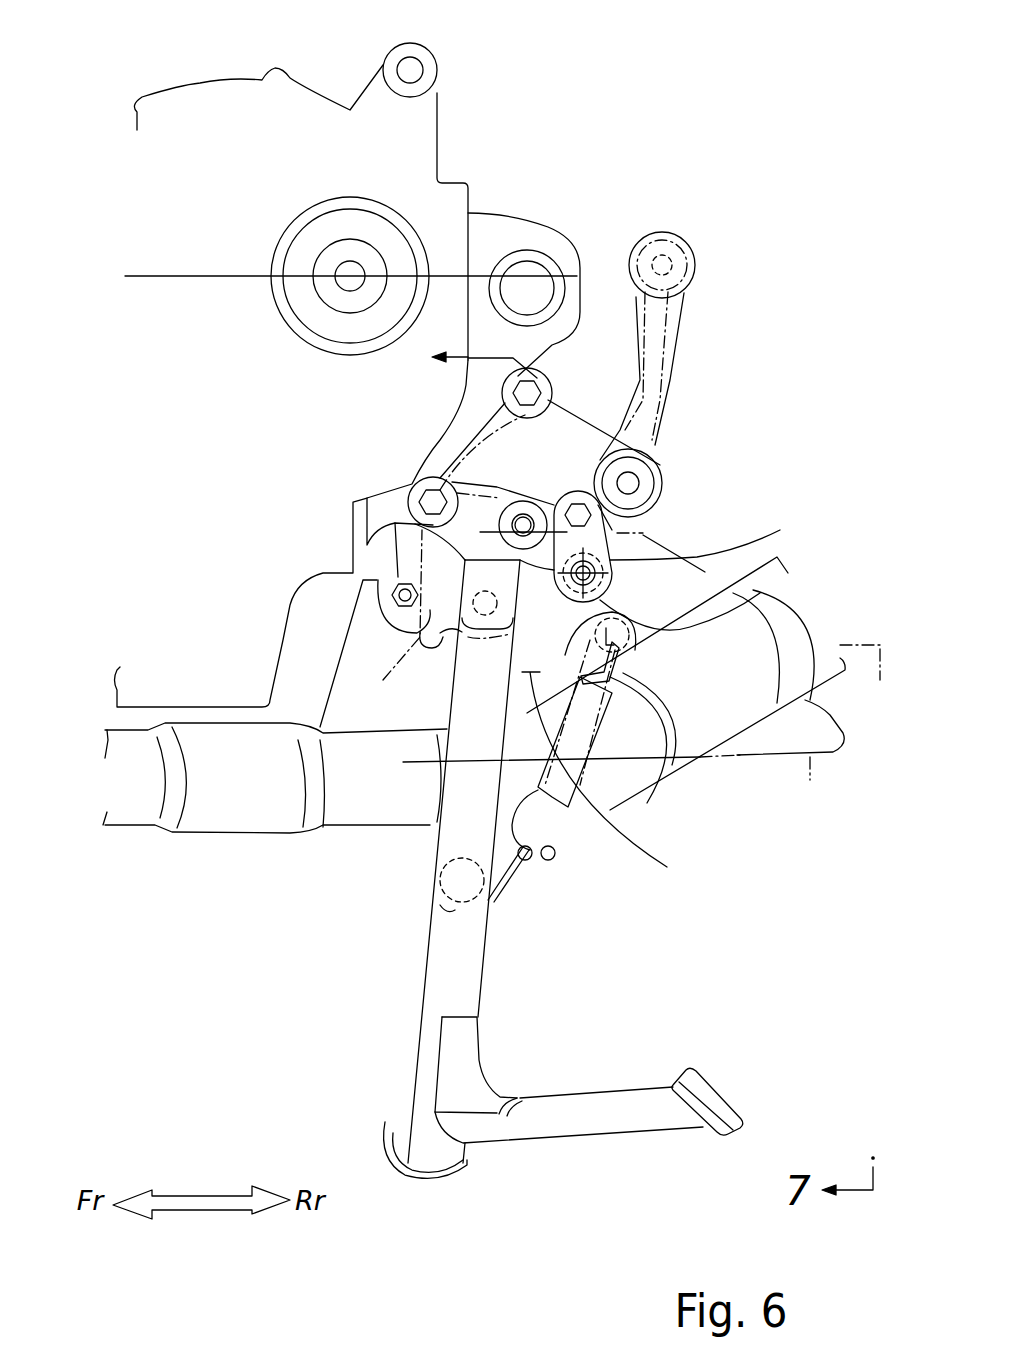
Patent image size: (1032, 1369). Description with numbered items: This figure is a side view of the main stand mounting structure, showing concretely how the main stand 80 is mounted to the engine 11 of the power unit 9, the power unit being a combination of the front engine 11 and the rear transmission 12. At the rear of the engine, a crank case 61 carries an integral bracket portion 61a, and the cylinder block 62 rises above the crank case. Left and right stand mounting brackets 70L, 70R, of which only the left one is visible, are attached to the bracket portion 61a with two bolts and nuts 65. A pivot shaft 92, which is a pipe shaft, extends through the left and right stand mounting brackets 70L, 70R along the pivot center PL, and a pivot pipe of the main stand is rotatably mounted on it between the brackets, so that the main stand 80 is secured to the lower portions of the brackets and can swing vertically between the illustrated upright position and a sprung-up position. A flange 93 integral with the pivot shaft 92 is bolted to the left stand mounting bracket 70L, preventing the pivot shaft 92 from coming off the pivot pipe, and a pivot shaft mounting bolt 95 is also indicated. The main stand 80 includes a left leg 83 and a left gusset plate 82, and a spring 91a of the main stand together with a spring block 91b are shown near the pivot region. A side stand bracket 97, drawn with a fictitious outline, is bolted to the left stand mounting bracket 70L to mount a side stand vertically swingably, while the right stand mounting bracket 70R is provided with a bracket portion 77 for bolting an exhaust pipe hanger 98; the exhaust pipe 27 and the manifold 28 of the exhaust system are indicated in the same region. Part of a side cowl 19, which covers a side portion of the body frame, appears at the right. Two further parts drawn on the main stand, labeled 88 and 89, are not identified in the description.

The cylinder block 62 is at (233, 102).
The crank case 61 is at (170, 645).
The bracket portion 61a is at (475, 417).
The bolts and nuts 65 is at (540, 385).
The left stand mounting bracket 70L is at (655, 381).
The right stand mounting bracket 70R is at (605, 406).
The pivot shaft mounting bolt 95 is at (632, 493).
The flange 93 is at (607, 533).
The pivot center PL is at (714, 542).
The spring block 91b is at (623, 587).
The pivot shaft 92 is at (823, 583).
The left gusset plate 82 is at (567, 693).
The side cowl 19 is at (810, 780).
The spring 91a is at (575, 793).
The clip 89 is at (548, 853).
The left leg 83 is at (472, 935).
The main stand 80 is at (482, 982).
The pedal 88 is at (620, 1100).
The bracket portion 77 is at (400, 570).
The side stand bracket 97 is at (406, 619).
The exhaust pipe hanger 98 is at (423, 705).
The power unit 9 is at (275, 824).
The engine 11 is at (275, 824).
The rear transmission 12 is at (207, 670).
The manifold 28 is at (364, 857).
The exhaust pipe 27 is at (343, 803).